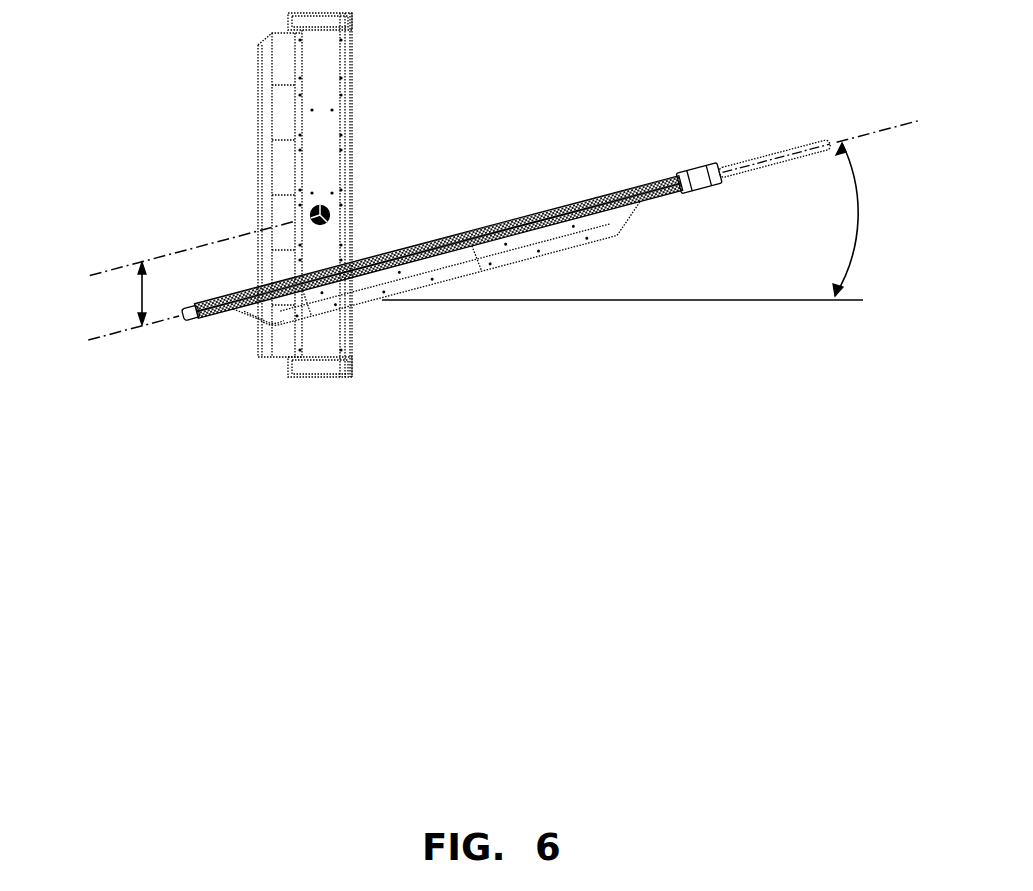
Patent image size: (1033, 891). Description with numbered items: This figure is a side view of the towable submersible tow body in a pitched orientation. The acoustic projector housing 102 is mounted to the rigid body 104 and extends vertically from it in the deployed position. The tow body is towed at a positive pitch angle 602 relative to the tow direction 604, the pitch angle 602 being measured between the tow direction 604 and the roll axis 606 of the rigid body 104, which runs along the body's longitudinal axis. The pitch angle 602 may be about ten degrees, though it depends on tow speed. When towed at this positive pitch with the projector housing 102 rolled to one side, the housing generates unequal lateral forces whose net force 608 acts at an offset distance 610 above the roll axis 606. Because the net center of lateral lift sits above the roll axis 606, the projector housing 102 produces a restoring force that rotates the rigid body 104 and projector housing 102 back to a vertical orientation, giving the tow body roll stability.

The acoustic projector housing 102 is at (348, 55).
The rigid body 104 is at (573, 230).
The pitch angle 602 is at (852, 253).
The tow direction 604 is at (677, 301).
The roll axis 606 is at (863, 131).
The net force 608 is at (330, 211).
The offset distance 610 is at (142, 300).